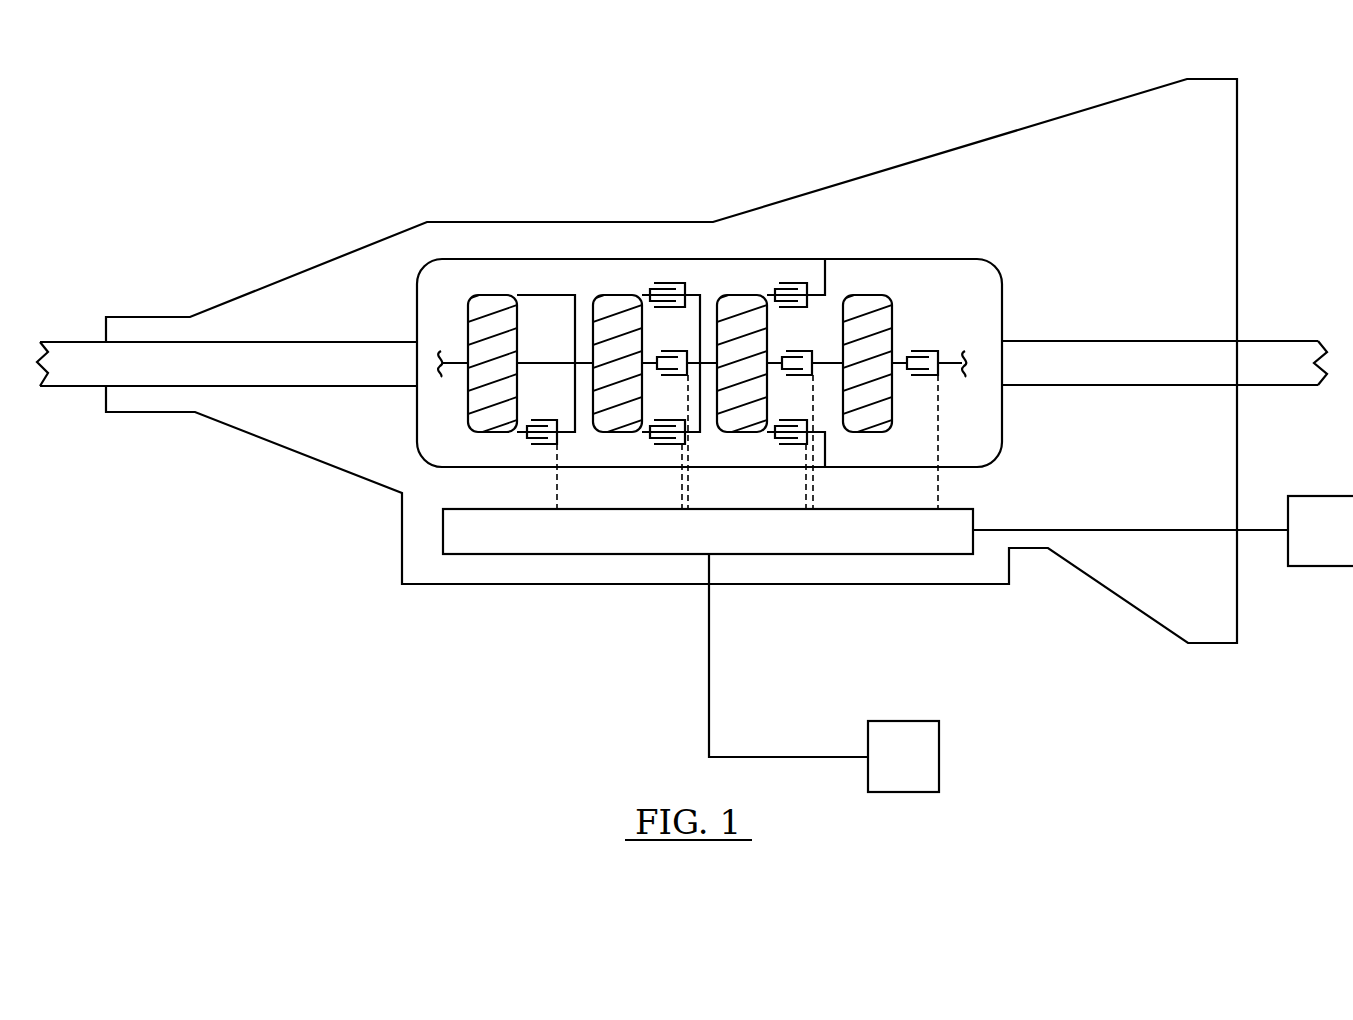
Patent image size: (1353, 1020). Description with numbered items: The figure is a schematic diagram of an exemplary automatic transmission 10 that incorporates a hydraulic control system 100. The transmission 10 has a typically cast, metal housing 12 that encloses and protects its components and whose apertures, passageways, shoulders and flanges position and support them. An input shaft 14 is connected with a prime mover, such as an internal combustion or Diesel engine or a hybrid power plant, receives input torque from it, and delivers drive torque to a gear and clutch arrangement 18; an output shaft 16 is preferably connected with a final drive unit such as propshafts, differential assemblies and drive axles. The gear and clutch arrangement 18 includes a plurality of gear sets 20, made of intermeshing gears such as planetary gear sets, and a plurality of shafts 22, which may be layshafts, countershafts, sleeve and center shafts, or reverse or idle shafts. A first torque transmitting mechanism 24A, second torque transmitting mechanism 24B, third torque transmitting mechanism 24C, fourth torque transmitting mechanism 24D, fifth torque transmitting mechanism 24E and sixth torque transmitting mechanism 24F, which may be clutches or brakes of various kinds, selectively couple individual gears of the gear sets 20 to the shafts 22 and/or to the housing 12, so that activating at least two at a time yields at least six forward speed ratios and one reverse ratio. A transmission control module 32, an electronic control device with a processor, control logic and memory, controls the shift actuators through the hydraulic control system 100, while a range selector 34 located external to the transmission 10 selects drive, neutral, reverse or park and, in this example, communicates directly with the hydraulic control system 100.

The automatic transmission 10 is at (766, 141).
The housing 12 is at (534, 222).
The input shaft 14 is at (1278, 341).
The output shaft 16 is at (77, 342).
The gear and clutch arrangement 18 is at (915, 258).
The gear sets 20 is at (486, 298).
The shafts 22 is at (578, 300).
The first torque transmitting mechanism 24A is at (546, 445).
The second torque transmitting mechanism 24B is at (672, 284).
The third torque transmitting mechanism 24C is at (668, 444).
The fourth torque transmitting mechanism 24D is at (800, 445).
The fifth torque transmitting mechanism 24E is at (815, 352).
The sixth torque transmitting mechanism 24F is at (921, 380).
The transmission control module 32 is at (824, 673).
The range selector 34 is at (1163, 531).
The hydraulic control system 100 is at (931, 556).